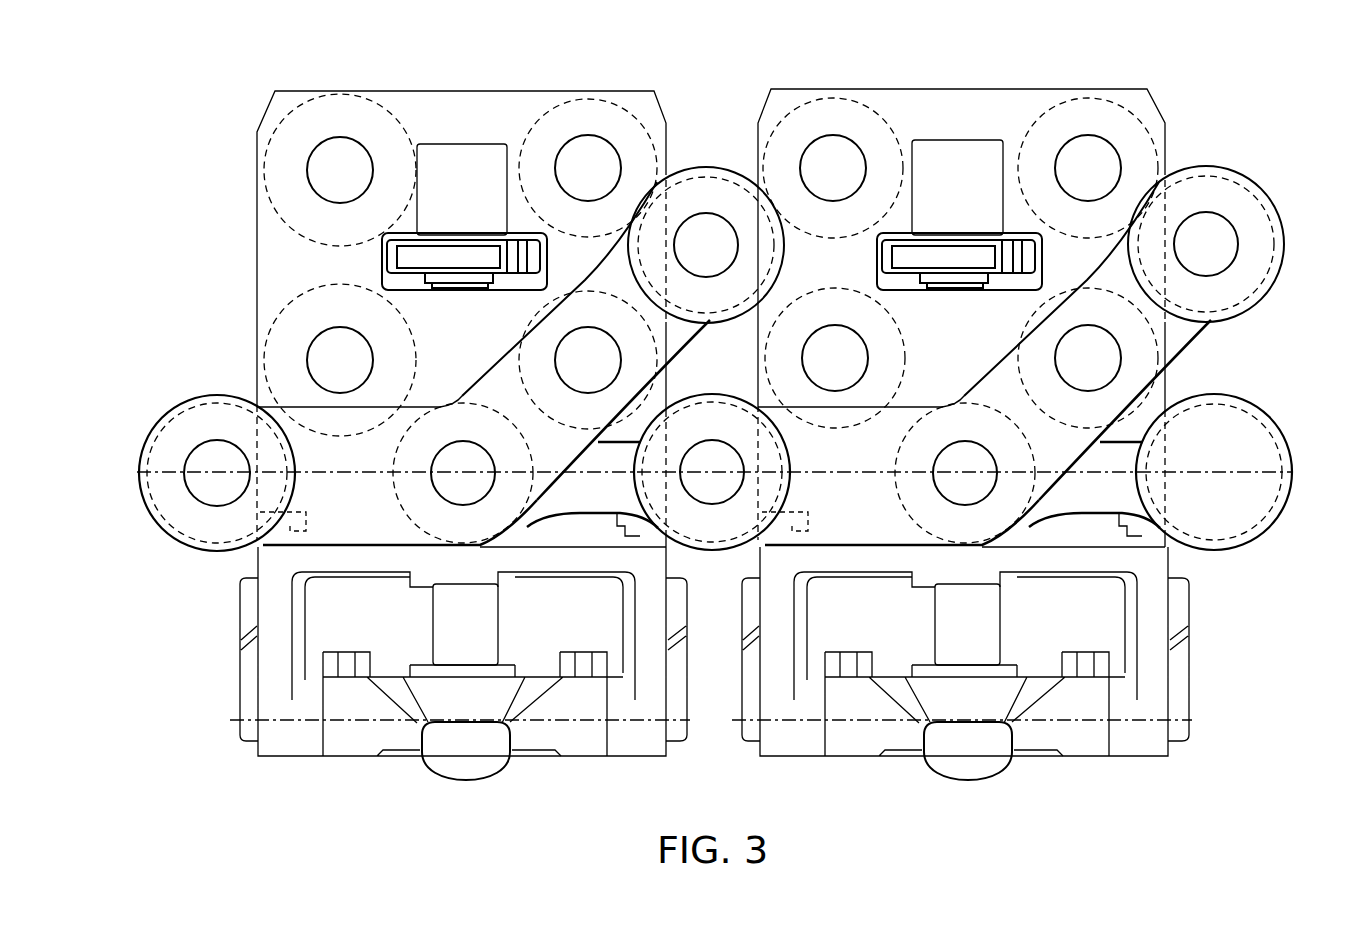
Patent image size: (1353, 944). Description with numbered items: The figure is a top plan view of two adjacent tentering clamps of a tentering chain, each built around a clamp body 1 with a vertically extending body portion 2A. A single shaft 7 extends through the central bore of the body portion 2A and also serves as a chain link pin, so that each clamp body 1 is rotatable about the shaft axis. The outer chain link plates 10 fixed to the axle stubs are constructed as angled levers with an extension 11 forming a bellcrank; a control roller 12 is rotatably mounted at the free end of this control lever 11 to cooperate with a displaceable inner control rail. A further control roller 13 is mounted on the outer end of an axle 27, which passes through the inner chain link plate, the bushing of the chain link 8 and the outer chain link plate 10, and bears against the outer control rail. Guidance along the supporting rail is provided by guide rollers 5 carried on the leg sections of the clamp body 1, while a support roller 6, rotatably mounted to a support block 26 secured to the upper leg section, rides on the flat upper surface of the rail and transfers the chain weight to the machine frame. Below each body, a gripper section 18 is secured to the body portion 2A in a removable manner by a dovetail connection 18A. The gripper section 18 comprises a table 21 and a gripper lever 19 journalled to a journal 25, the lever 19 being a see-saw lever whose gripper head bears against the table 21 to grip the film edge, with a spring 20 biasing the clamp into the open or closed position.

The clamp body 1 is at (476, 122).
The body portion 2A is at (557, 547).
The guide rollers 5 is at (340, 120).
The support roller 6 is at (415, 258).
The single shaft 7 is at (450, 472).
The chain link 8 is at (603, 504).
The outer chain link plates 10 is at (360, 521).
The control lever 11 is at (610, 256).
The control roller 12 is at (690, 190).
The control roller 13 is at (214, 537).
The gripper section 18 is at (400, 775).
The dovetail connection 18A is at (293, 540).
The gripper lever 19 is at (508, 757).
The spring 20 is at (483, 638).
The table 21 is at (245, 682).
The journal 25 is at (620, 718).
The support block 26 is at (433, 155).
The axle 27 is at (722, 467).